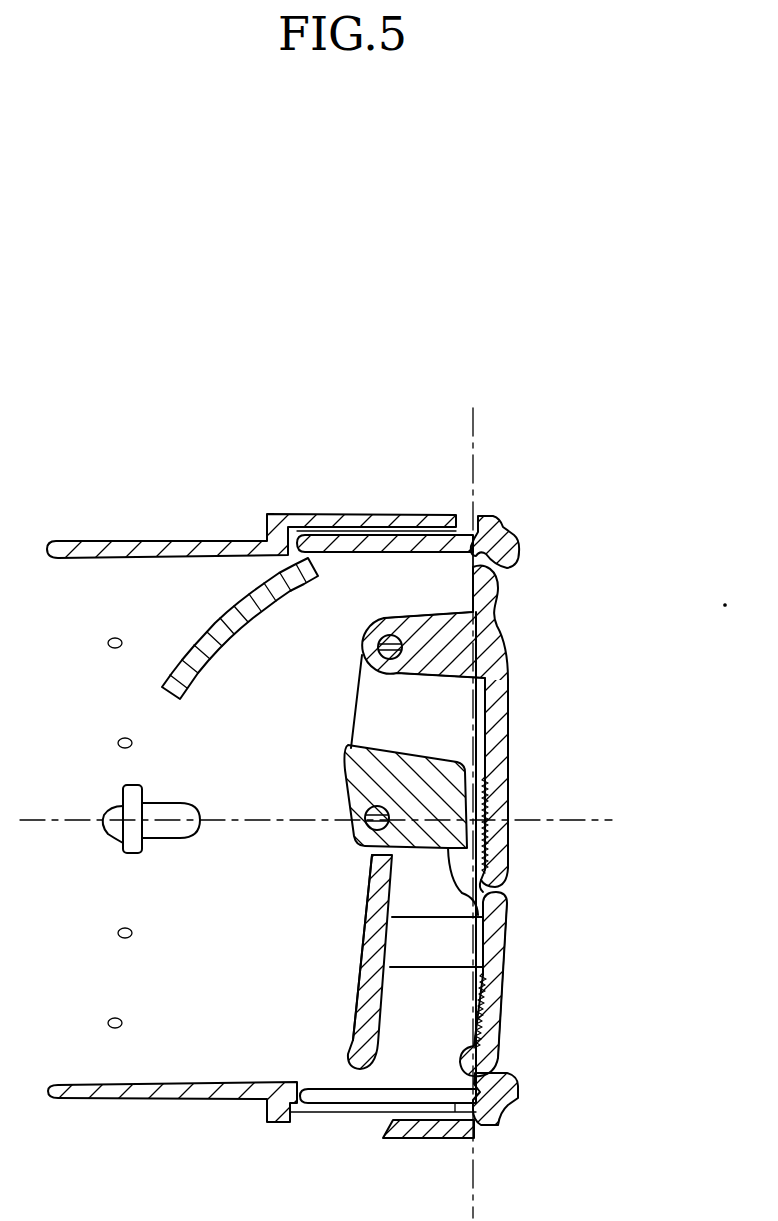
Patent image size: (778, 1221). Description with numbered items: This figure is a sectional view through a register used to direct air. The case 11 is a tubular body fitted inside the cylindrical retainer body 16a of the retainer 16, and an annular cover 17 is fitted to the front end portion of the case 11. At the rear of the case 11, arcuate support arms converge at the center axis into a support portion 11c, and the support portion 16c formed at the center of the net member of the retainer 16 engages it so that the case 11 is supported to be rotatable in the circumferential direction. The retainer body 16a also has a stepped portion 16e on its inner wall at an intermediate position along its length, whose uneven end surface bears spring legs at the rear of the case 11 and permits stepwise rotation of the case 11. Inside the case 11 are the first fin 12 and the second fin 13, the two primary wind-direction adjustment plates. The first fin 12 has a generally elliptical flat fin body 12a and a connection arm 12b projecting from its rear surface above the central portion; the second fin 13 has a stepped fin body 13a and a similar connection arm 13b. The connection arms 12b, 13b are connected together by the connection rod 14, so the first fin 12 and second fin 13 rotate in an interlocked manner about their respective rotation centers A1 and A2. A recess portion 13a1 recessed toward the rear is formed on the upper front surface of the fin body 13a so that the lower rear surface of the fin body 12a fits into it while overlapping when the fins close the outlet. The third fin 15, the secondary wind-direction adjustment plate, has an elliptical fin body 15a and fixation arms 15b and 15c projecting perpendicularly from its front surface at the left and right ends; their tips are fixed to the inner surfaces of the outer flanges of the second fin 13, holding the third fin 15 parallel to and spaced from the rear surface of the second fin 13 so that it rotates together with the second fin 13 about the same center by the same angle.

The retainer 16 is at (272, 512).
The case 11 is at (384, 533).
The annular cover 17 is at (510, 534).
The first fin 12 is at (506, 654).
The connection arm 12b is at (438, 614).
The fin body 12a is at (502, 755).
The rotation center A1 is at (386, 630).
The connection rod 14 is at (358, 701).
The connection arm 13b is at (436, 770).
The rotation center A2 is at (370, 826).
The recess portion 13a1 is at (484, 882).
The second fin 13 is at (513, 919).
The stepped fin body 13a is at (499, 1010).
The third fin 15 is at (380, 1065).
The fin body 15a is at (380, 997).
The fixation arm 15b is at (390, 917).
The fixation arm 15c is at (398, 943).
The support portion 16c is at (117, 833).
The support portion 11c is at (183, 832).
The retainer body 16a is at (155, 1100).
The stepped portion 16e is at (294, 1104).